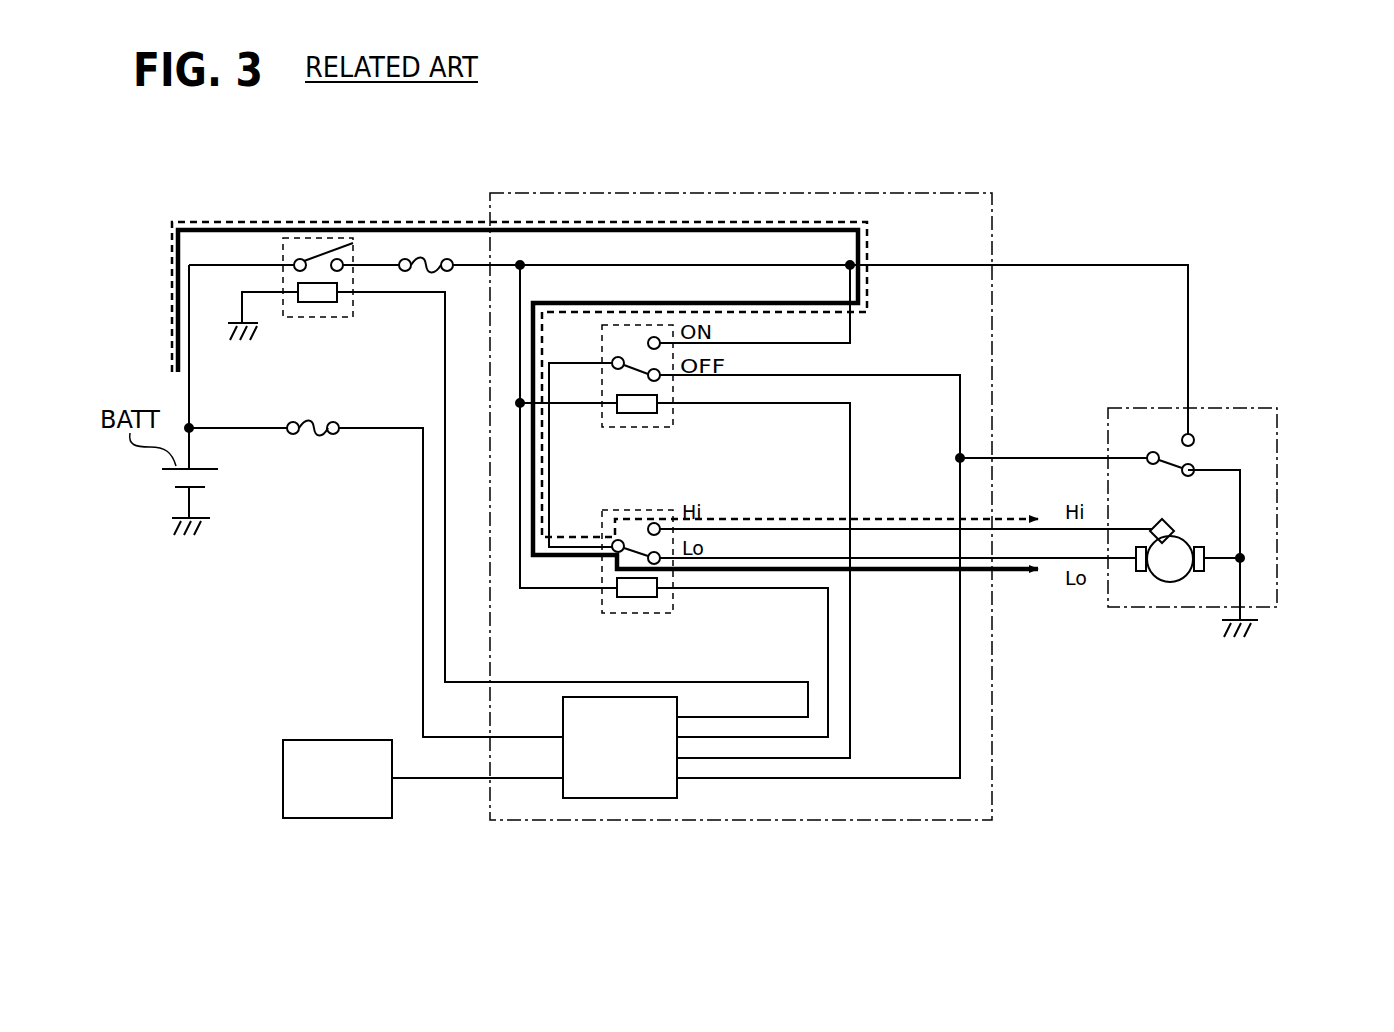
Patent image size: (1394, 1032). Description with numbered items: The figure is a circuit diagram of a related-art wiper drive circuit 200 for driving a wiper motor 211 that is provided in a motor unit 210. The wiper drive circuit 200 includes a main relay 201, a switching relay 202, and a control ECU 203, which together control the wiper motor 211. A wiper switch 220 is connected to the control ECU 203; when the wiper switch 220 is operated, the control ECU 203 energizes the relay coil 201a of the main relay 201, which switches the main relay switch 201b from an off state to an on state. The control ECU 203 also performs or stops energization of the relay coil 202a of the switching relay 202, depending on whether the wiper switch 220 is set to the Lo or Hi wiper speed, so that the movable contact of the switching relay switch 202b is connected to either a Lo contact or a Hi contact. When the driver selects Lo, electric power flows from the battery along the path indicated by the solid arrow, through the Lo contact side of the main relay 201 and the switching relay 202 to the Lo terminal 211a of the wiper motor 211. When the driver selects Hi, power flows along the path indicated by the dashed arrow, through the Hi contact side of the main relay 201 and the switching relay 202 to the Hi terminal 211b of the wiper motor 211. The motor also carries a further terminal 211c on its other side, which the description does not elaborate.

The wiper drive circuit 200 is at (922, 190).
The main relay 201 is at (676, 419).
The relay coil 201a is at (642, 415).
The main relay switch 201b is at (638, 362).
The switching relay 202 is at (677, 603).
The relay coil 202a is at (648, 598).
The switching relay switch 202b is at (632, 543).
The control ECU 203 is at (626, 800).
The motor unit 210 is at (1279, 540).
The wiper motor 211 is at (1166, 582).
The Lo terminal 211a is at (1140, 578).
The Hi terminal 211b is at (1163, 521).
The common brush 211c is at (1194, 580).
The wiper switch 220 is at (332, 820).